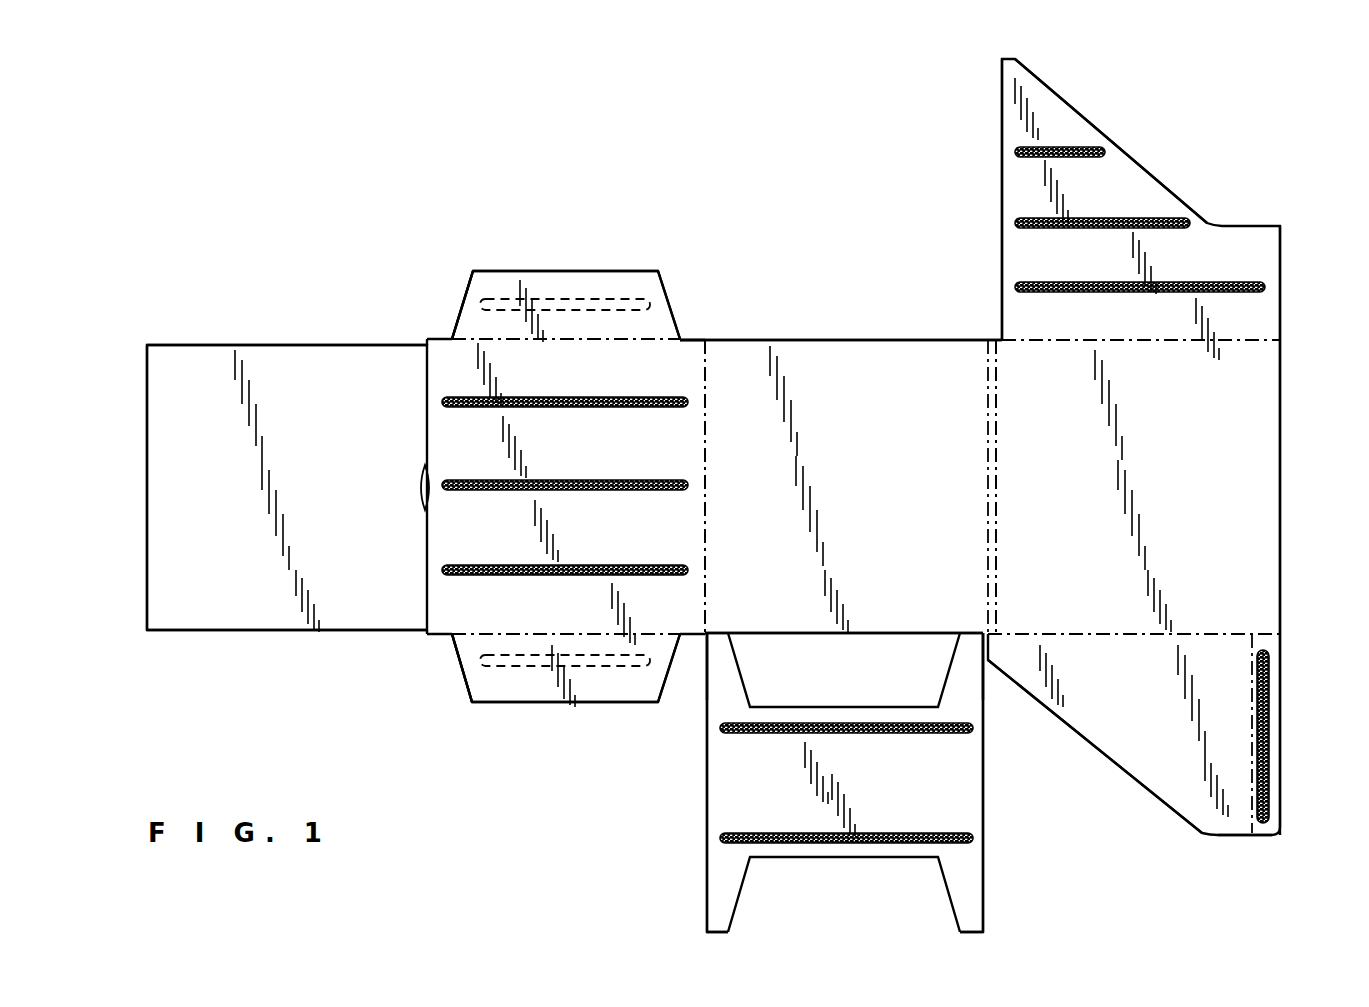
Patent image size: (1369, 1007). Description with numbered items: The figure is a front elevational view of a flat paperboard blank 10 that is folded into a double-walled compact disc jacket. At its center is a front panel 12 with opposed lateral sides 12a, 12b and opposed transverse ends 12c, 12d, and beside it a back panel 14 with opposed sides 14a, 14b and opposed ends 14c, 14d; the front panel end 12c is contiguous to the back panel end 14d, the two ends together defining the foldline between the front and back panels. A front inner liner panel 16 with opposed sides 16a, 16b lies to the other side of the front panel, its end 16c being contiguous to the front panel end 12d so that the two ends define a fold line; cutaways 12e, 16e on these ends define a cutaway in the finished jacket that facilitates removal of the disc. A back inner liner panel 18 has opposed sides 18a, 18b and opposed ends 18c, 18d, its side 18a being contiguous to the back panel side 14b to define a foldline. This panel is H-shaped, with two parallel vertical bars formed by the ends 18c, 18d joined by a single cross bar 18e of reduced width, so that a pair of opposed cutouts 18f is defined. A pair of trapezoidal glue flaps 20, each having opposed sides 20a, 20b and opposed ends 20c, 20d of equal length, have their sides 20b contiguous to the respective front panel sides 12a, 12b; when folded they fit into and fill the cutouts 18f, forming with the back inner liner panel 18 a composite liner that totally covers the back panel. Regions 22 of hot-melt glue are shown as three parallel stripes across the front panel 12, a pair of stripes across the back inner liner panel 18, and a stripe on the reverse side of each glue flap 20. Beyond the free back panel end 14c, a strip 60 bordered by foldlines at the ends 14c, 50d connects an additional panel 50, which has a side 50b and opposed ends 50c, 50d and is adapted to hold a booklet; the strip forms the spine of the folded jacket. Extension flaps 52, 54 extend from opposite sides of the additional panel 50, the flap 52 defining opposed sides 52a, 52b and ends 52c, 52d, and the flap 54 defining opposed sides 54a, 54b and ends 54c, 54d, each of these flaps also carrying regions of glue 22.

The paperboard blank 10 is at (808, 228).
The front panel 12 is at (561, 461).
The front panel lateral side 12a is at (532, 341).
The front panel lateral side 12b is at (520, 634).
The front panel transverse end 12c is at (705, 556).
The front panel transverse end 12d is at (427, 536).
The cutaway 12e is at (433, 498).
The back panel 14 is at (861, 446).
The back panel side 14a is at (848, 341).
The back panel side 14b is at (844, 608).
The back panel end 14c is at (988, 526).
The back panel end 14d is at (705, 455).
The front inner liner panel 16 is at (256, 546).
The front inner liner panel side 16a is at (290, 345).
The front inner liner panel side 16b is at (255, 630).
The front inner liner panel end 16c is at (147, 530).
The cutaway 16e is at (417, 488).
The back inner liner panel 18 is at (786, 798).
The back inner liner panel side 18a is at (707, 650).
The back inner liner panel side 18b is at (707, 932).
The back inner liner panel end 18c is at (983, 775).
The back inner liner panel end 18d is at (707, 790).
The cross bar 18e is at (948, 795).
The cutouts 18f is at (852, 680).
The glue flaps 20 is at (640, 340).
The glue flap side 20a is at (500, 271).
The glue flap side 20b is at (490, 339).
The glue flap end 20c is at (670, 295).
The glue flap end 20d is at (463, 300).
The regions of glue 22 is at (592, 298).
The additional panel 50 is at (1180, 461).
The additional panel side 50b is at (1130, 341).
The additional panel end 50c is at (1280, 525).
The additional panel end 50d is at (996, 478).
The extension flap 52 is at (1119, 198).
The extension flap side 52a is at (1085, 118).
The extension flap side 52b is at (1155, 340).
The extension flap end 52c is at (1280, 235).
The extension flap end 52d is at (1002, 252).
The extension flap 54 is at (1165, 733).
The extension flap side 54a is at (1228, 835).
The extension flap side 54b is at (1160, 634).
The extension flap end 54c is at (1280, 780).
The extension flap end 54d is at (1115, 762).
The strip 60 is at (996, 340).